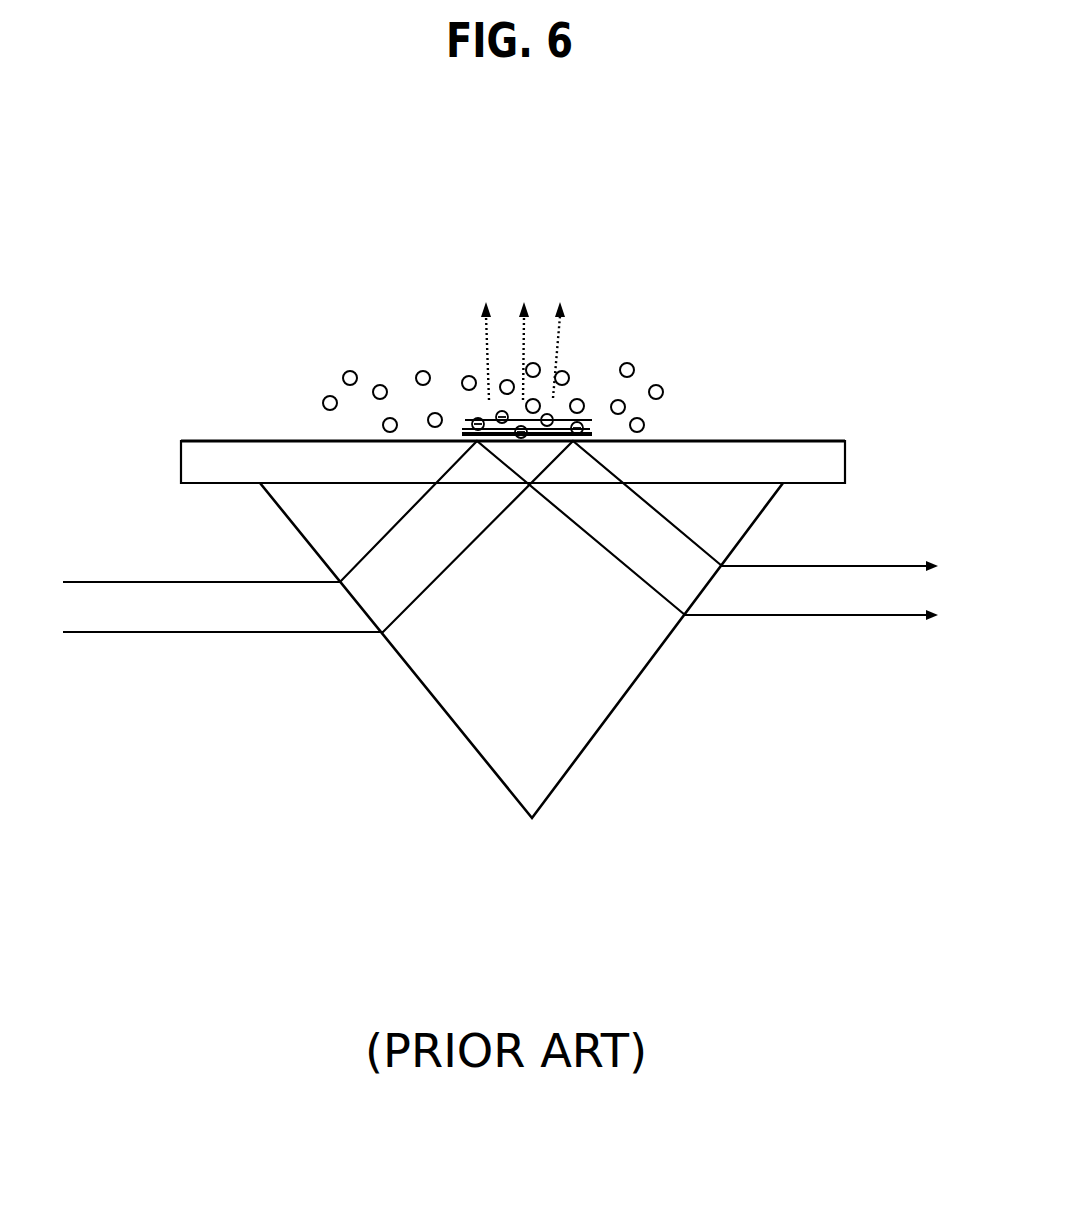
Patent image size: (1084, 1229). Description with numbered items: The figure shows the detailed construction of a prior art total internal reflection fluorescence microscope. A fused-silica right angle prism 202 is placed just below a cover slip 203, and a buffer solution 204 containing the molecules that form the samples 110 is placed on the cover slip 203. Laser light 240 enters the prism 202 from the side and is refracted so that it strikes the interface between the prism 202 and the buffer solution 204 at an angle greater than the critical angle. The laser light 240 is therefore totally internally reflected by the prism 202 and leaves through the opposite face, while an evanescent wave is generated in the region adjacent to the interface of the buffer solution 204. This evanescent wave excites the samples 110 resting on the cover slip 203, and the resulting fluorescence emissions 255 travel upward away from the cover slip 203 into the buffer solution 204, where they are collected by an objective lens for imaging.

The samples 110 is at (570, 372).
The fused-silica right angle prism 202 is at (740, 530).
The cover slip 203 is at (815, 440).
The buffer solution 204 is at (707, 412).
The laser light 240 is at (255, 638).
The fluorescence emissions 255 is at (478, 345).